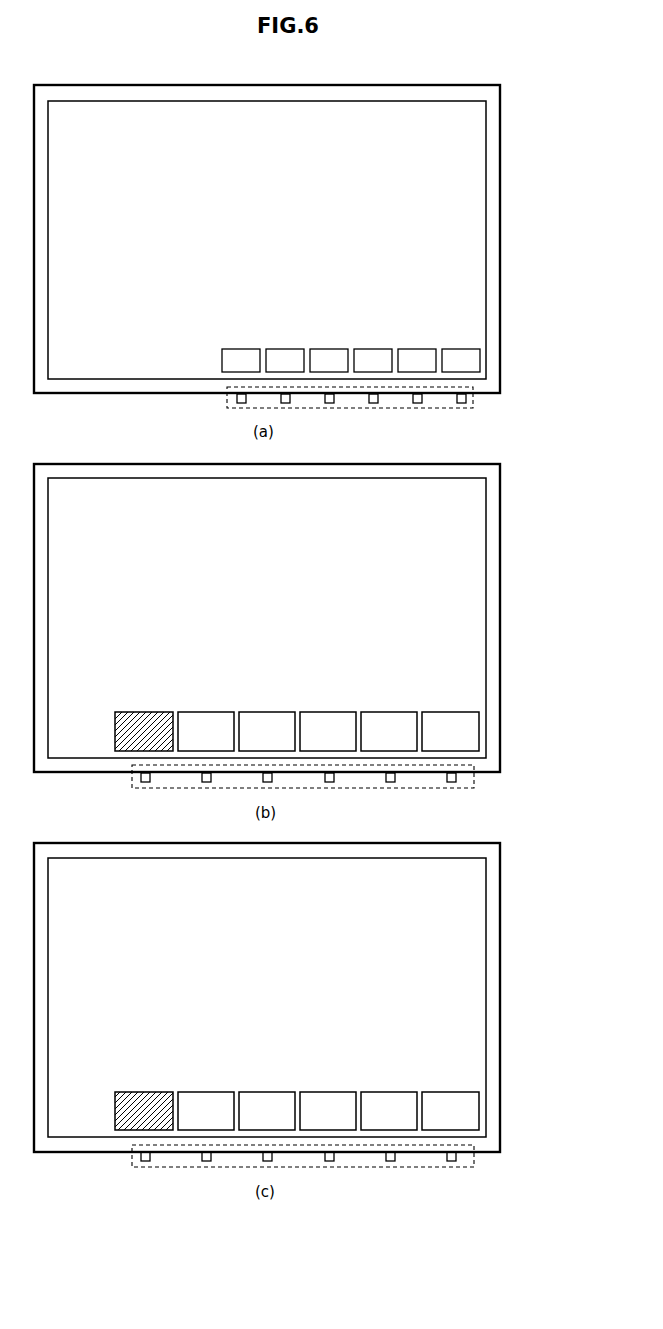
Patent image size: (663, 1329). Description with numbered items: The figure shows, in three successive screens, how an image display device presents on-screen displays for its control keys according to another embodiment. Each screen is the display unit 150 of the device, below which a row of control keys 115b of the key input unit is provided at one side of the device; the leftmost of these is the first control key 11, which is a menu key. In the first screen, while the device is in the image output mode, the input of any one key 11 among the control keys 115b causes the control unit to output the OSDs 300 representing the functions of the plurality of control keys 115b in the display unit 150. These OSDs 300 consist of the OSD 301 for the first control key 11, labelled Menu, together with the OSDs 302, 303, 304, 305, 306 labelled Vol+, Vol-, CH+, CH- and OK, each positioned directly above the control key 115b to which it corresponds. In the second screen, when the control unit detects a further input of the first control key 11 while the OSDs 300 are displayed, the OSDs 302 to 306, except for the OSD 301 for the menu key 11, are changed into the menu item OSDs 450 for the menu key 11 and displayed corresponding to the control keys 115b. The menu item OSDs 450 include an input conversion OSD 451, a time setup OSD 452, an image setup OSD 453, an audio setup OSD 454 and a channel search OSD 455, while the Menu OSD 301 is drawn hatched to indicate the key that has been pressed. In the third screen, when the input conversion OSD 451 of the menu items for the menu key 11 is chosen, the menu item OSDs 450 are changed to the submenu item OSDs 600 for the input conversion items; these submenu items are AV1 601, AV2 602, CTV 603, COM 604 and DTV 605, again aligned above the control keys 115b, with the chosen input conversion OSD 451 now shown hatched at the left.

The display unit 150 is at (470, 188).
The OSDs for the control keys 300 is at (479, 303).
The OSD for the first control key 301 is at (241, 348).
The OSD for a control key 302 is at (285, 348).
The OSD for a control key 303 is at (329, 348).
The OSD for a control key 304 is at (373, 348).
The OSD for a control key 305 is at (417, 348).
The OSD for a control key 306 is at (461, 348).
The control keys 115b is at (475, 400).
The first control key (menu key) 11 is at (241, 405).
The menu item OSDs 450 is at (183, 668).
The input conversion OSD 451 is at (207, 712).
The time setup OSD 452 is at (267, 712).
The image setup OSD 453 is at (329, 712).
The audio setup OSD 454 is at (390, 712).
The channel search OSD 455 is at (452, 712).
The submenu item OSDs 600 is at (183, 1048).
The AV1 submenu item 601 is at (207, 1092).
The AV2 submenu item 602 is at (267, 1092).
The CTV submenu item 603 is at (329, 1092).
The COM submenu item 604 is at (390, 1092).
The DTV submenu item 605 is at (452, 1092).